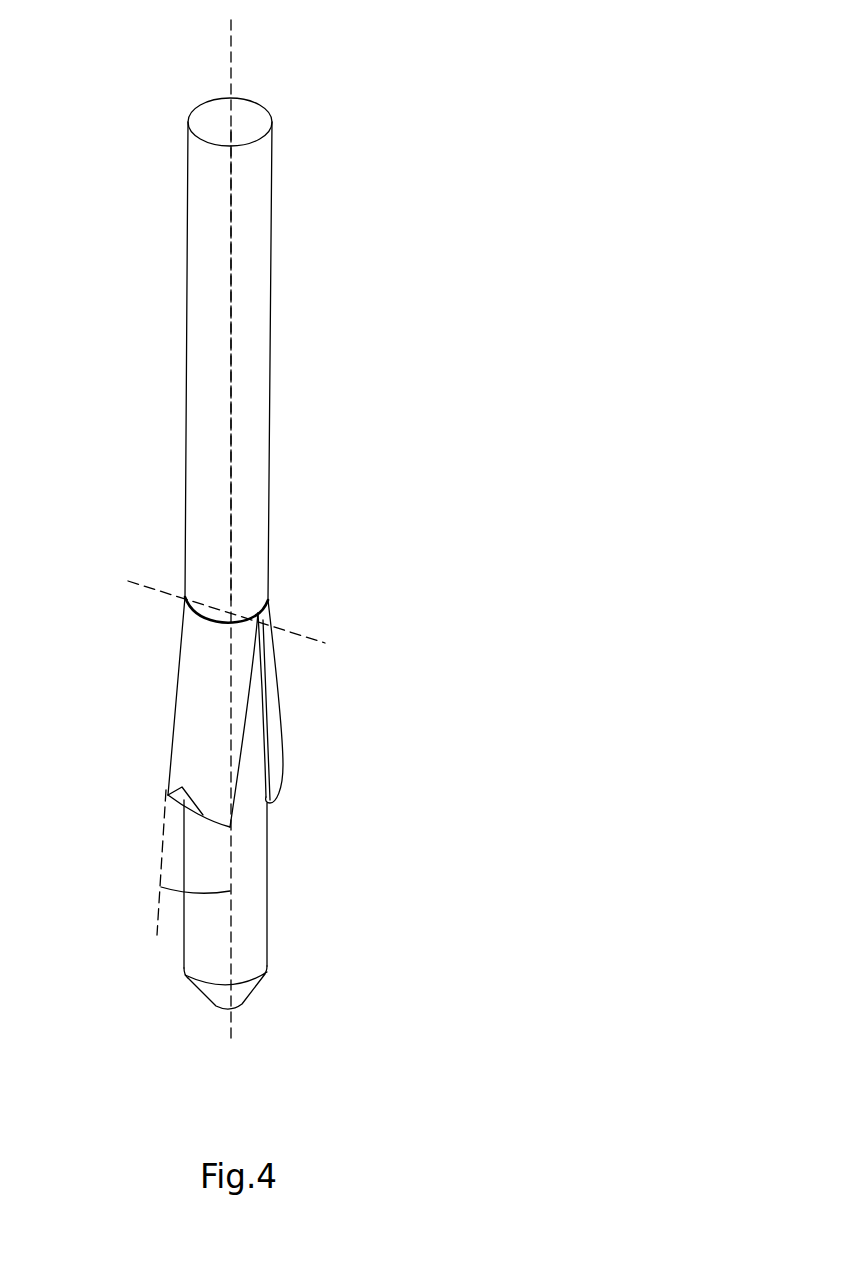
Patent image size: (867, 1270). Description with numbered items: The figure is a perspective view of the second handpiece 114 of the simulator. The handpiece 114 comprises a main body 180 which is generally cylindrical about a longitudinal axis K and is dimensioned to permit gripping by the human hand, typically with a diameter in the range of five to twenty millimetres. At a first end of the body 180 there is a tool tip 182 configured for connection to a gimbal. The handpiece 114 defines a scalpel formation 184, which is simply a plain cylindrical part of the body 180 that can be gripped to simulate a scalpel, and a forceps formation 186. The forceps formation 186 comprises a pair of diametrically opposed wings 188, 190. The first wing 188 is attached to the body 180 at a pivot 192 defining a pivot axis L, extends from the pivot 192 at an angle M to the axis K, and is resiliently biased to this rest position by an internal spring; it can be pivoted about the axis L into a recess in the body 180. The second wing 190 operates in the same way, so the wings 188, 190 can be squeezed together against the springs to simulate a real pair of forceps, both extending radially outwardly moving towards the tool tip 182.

The second handpiece 114 is at (316, 530).
The main body 180 is at (238, 547).
The tool tip 182 is at (233, 995).
The scalpel formation 184 is at (333, 234).
The forceps formation 186 is at (316, 683).
The first wing 188 is at (203, 723).
The second wing 190 is at (275, 752).
The pivot 192 is at (207, 635).